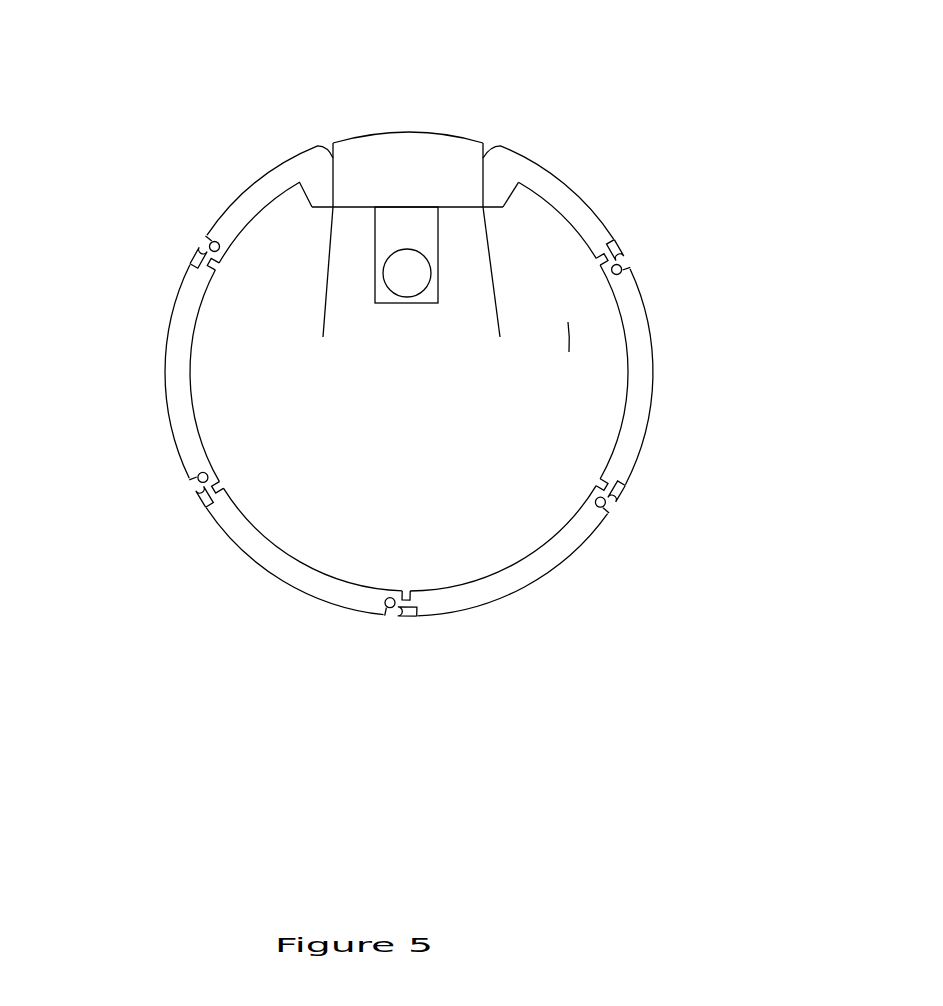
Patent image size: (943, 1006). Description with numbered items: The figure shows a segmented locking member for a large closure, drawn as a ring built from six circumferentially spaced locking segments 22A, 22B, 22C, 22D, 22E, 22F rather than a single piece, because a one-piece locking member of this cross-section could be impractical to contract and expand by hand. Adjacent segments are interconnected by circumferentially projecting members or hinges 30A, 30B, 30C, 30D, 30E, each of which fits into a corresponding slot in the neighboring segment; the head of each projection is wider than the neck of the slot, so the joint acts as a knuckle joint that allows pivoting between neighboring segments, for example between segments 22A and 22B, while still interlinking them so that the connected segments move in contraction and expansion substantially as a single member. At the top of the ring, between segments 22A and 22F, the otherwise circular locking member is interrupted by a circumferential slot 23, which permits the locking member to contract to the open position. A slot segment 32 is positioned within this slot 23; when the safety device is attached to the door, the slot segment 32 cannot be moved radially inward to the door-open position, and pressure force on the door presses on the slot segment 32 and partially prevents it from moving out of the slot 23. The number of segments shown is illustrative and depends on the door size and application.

The locking member segment 22A is at (538, 185).
The locking member segment 22B is at (635, 338).
The locking member segment 22C is at (567, 547).
The locking member segment 22D is at (250, 548).
The locking member segment 22E is at (180, 342).
The locking member segment 22F is at (247, 198).
The hinge 30A is at (613, 273).
The hinge 30B is at (608, 505).
The hinge 30C is at (388, 603).
The hinge 30D is at (198, 477).
The hinge 30E is at (210, 242).
The slot segment 32 is at (387, 128).
The circumferential slot 23 is at (323, 337).